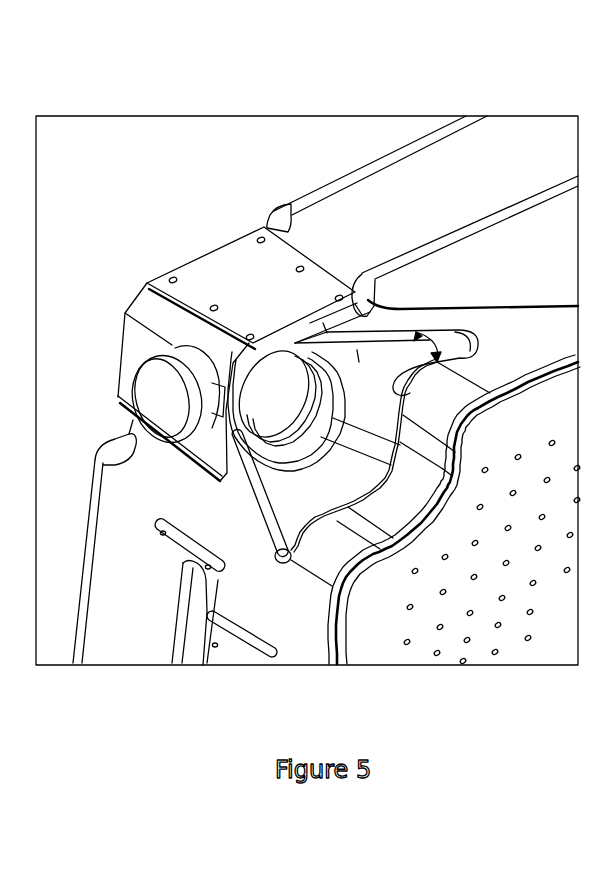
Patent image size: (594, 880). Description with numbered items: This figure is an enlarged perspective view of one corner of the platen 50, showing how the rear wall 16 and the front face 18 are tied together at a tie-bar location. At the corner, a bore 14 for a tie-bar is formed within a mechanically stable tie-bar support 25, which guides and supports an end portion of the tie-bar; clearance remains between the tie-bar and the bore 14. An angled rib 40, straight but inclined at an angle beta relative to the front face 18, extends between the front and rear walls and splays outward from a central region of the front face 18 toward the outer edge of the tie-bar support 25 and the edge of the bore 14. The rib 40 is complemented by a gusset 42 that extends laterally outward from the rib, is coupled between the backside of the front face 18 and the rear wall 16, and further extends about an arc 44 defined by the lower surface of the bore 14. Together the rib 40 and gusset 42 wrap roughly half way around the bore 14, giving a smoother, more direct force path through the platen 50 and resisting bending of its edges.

The bore 14 is at (270, 398).
The rear wall 16 is at (440, 163).
The front face 18 is at (530, 655).
The tie-bar support structure 25 is at (152, 312).
The angled/inclined rib 40 is at (413, 325).
The gusset 42 is at (293, 503).
The arc 44 is at (285, 472).
The platen 50 is at (85, 418).